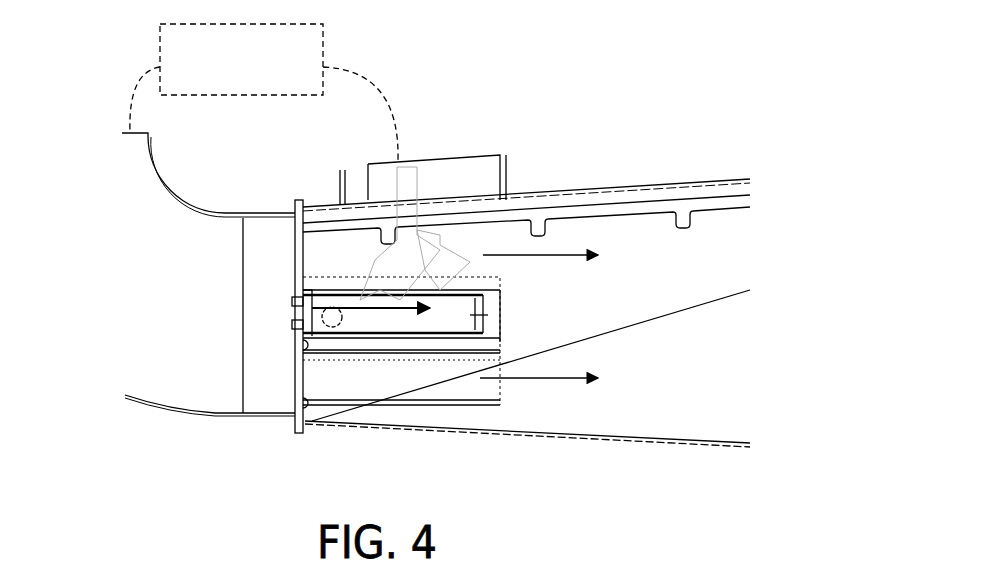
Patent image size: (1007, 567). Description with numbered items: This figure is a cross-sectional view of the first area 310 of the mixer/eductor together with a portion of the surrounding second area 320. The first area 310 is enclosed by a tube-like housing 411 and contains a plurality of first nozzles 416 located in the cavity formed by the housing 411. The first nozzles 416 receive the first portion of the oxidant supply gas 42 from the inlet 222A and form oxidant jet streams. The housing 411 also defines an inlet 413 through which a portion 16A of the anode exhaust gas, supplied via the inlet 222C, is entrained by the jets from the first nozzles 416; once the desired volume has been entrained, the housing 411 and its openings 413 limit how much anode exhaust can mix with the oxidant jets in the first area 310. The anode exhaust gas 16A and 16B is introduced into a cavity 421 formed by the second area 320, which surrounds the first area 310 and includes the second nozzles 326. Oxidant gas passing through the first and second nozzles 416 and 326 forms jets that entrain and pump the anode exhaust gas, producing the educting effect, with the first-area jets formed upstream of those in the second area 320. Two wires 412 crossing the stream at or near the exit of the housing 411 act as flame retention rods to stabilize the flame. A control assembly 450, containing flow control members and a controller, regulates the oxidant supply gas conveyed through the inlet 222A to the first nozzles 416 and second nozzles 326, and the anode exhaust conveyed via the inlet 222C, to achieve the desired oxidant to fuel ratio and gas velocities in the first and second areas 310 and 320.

The control assembly 450 is at (325, 35).
The inlet 222A is at (123, 132).
The inlet 222C is at (487, 155).
The second area 320 is at (705, 248).
The second nozzles 326 is at (313, 372).
The first nozzles 416 is at (294, 296).
The first area 310 is at (461, 320).
The wires 412 is at (502, 307).
The cavity 421 is at (419, 286).
The inlet 413 is at (341, 318).
The housing 411 is at (329, 342).
The portion of the anode exhaust gas 16A is at (380, 288).
The anode exhaust gas 16B is at (437, 250).
The oxidant supply gas 42 is at (216, 303).